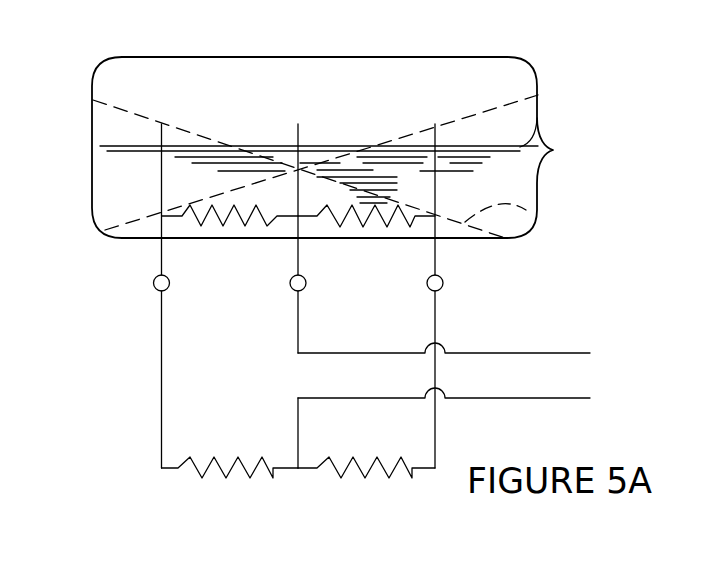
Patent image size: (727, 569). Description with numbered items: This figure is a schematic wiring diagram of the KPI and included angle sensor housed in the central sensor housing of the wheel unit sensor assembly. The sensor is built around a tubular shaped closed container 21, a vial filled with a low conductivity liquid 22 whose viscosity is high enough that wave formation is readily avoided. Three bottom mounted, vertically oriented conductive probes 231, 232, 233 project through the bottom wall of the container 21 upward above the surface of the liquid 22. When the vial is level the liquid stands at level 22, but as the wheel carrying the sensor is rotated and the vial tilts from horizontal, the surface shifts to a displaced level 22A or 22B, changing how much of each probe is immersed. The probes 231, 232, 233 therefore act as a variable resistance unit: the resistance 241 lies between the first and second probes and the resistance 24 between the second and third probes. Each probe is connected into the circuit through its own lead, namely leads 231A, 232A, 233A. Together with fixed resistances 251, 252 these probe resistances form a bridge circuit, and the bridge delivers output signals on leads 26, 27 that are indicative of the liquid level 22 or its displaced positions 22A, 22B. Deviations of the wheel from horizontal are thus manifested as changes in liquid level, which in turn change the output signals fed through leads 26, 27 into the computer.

The tubular shaped closed container 21 is at (402, 57).
The low conductivity liquid 22 is at (540, 118).
The displaced liquid level 22A is at (136, 112).
The displaced liquid level 22B is at (526, 210).
The first conductive probe 231 is at (161, 133).
The second conductive probe 232 is at (298, 125).
The third conductive probe 233 is at (436, 130).
The first resistance 241 is at (218, 218).
The resistance 24 is at (360, 217).
The first probe lead 231A is at (162, 353).
The second probe lead 232A is at (298, 335).
The third probe lead 233A is at (435, 305).
The output lead 26 is at (513, 354).
The output lead 27 is at (535, 400).
The first bridge resistance 251 is at (218, 472).
The second bridge resistance 252 is at (373, 473).